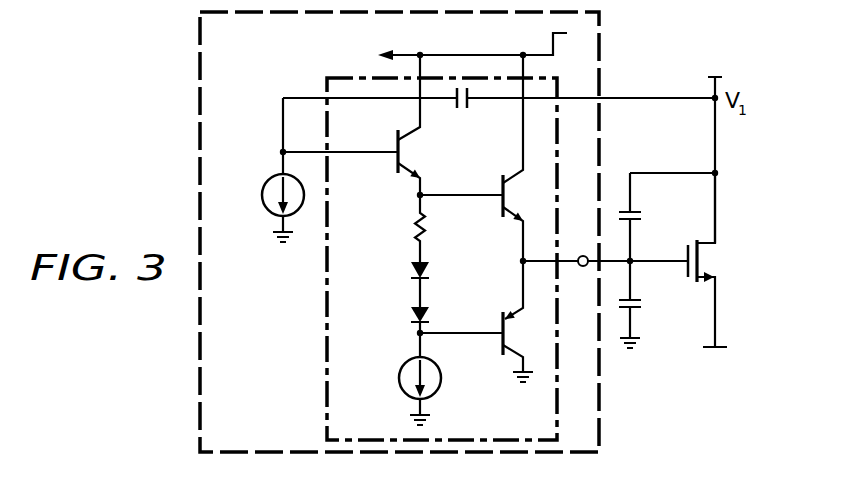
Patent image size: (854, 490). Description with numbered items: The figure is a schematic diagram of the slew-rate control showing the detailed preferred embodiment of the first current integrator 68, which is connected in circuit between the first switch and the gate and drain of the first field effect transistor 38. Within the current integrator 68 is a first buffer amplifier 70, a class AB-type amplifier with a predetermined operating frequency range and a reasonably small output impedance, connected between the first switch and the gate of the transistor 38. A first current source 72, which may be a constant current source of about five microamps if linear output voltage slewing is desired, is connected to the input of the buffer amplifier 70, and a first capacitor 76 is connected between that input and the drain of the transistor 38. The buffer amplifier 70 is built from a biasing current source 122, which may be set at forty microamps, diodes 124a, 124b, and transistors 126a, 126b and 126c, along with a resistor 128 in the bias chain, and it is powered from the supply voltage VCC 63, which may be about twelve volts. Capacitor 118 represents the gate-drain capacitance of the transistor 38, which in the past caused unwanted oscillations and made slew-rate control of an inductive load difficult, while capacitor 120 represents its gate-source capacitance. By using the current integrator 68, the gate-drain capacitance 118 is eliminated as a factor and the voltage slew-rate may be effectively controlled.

The first field effect transistor 38 is at (712, 260).
The supply voltage VCC 63 is at (553, 33).
The first current integrator 68 is at (200, 35).
The first buffer amplifier 70 is at (327, 283).
The first current source 72 is at (263, 192).
The first capacitor 76 is at (468, 104).
The gate-drain capacitance 118 is at (645, 214).
The gate-source capacitance 120 is at (645, 305).
The biasing current source 122 is at (401, 374).
The diode 124a is at (411, 272).
The diode 124b is at (411, 314).
The transistor 126a is at (398, 134).
The transistor 126b is at (503, 180).
The transistor 126c is at (503, 344).
The resistor 128 is at (415, 224).